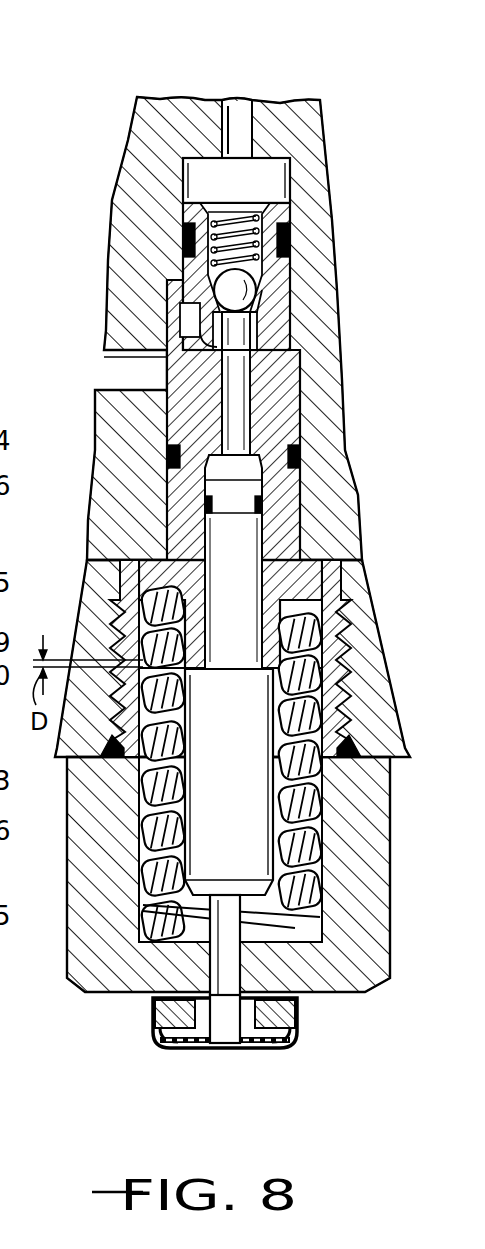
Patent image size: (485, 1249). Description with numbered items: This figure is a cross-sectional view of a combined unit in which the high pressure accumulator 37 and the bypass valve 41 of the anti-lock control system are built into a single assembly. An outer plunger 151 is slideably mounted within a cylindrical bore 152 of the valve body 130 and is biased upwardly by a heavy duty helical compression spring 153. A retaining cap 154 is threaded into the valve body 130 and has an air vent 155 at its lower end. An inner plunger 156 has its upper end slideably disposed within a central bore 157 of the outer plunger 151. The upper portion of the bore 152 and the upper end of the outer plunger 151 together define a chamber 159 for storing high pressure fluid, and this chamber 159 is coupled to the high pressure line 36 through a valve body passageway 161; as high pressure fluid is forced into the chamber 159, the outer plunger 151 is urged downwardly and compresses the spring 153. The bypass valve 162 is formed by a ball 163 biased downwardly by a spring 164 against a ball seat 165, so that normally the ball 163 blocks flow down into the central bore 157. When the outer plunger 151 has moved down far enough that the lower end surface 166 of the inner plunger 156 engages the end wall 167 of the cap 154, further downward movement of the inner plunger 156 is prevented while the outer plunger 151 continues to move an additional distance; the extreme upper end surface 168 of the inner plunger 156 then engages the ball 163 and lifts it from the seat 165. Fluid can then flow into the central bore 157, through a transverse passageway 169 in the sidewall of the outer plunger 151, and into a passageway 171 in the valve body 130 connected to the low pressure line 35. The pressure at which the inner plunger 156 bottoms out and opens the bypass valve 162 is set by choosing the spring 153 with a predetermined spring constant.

The valve body 130 is at (310, 214).
The outer plunger 151 is at (287, 412).
The cylindrical bore 152 is at (296, 500).
The helical compression spring 153 is at (322, 675).
The retaining cap 154 is at (360, 812).
The air vent 155 is at (220, 953).
The inner plunger 156 is at (243, 547).
The central bore 157 is at (250, 328).
The chamber 159 is at (267, 182).
The valve body passageway 161 is at (240, 137).
The bypass valve 162 is at (272, 283).
The ball 163 is at (228, 289).
The spring 164 is at (215, 212).
The ball seat 165 is at (265, 297).
The lower end surface 166 is at (322, 890).
The end wall 167 is at (300, 990).
The extreme upper end surface 168 is at (190, 306).
The transverse passageway 169 is at (200, 343).
The passageway 171 is at (125, 382).
The high pressure line 36 is at (239, 95).
The low pressure line 35 is at (87, 372).
The high pressure accumulator 37 is at (82, 1049).
The bypass valve 41 is at (236, 1125).